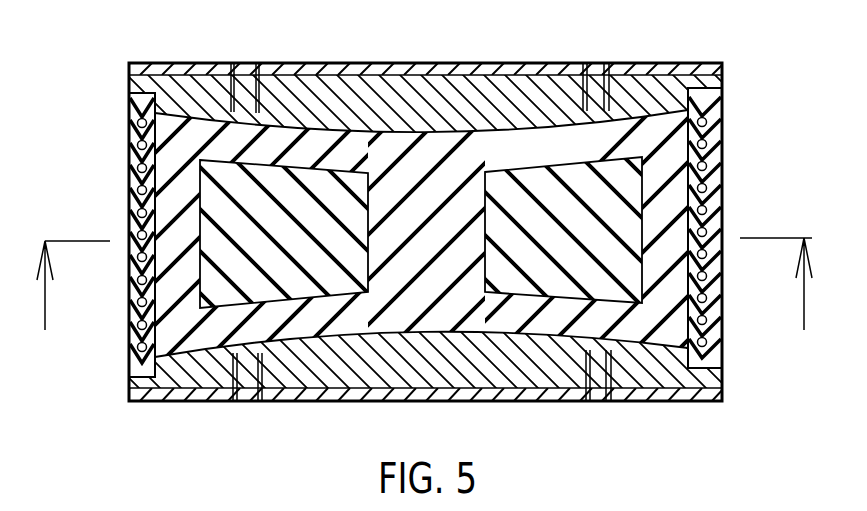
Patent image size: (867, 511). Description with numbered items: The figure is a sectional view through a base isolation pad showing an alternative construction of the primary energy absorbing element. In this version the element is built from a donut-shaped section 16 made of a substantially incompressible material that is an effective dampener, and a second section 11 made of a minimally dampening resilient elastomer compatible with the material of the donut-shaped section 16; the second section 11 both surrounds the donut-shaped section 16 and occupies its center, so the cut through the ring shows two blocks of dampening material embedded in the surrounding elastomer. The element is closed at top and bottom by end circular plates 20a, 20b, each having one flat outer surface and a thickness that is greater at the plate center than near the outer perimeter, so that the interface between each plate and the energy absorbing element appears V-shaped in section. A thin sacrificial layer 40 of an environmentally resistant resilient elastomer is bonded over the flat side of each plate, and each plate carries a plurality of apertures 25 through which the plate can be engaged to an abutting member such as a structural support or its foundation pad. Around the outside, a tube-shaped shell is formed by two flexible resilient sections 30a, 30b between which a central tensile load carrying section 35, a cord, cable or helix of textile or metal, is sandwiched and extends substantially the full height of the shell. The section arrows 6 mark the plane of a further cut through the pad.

The section line 6- 6 is at (424, 276).
The second section 11 is at (178, 327).
The donut-shaped section 16 is at (299, 288).
The end circular plate 20a is at (443, 83).
The end circular plate 20b is at (518, 396).
The apertures 25 is at (248, 82).
The flexible resilient section 30a is at (712, 112).
The flexible resilient section 30b is at (700, 200).
The central tensile load carrying section 35 is at (703, 165).
The sacrificial layer 40 is at (332, 70).